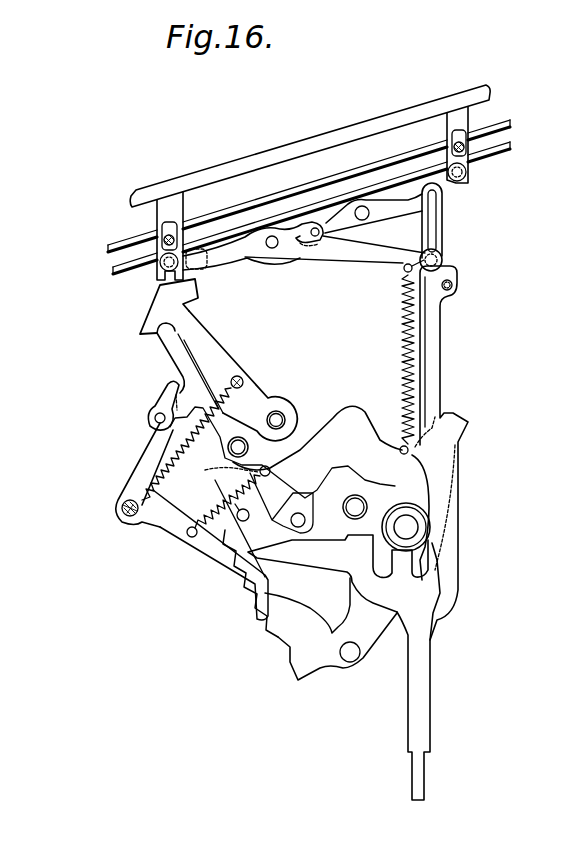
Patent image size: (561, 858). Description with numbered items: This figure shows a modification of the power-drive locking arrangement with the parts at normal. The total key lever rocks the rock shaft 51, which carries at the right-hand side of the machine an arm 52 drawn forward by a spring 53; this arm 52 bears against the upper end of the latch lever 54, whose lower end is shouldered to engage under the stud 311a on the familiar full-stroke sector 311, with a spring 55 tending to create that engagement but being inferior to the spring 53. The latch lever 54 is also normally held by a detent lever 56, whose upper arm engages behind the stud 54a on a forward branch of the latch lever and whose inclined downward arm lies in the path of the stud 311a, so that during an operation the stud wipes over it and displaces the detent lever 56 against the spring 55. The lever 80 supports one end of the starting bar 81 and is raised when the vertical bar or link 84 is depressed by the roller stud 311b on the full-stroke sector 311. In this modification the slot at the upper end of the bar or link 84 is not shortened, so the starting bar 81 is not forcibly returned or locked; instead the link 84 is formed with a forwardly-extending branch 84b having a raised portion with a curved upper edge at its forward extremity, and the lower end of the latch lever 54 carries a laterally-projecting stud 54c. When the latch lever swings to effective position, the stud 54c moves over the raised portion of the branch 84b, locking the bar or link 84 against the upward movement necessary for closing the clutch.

The starting bar 81 is at (332, 131).
The starting bar lever 80 is at (247, 258).
The arm 52 is at (227, 359).
The latch lever 54 is at (177, 357).
The stud 54a is at (153, 417).
The laterally-projecting stud 54c is at (302, 496).
The rock shaft 51 is at (278, 416).
The spring 53 is at (190, 438).
The spring 55 is at (189, 535).
The detent lever 56 is at (148, 471).
The vertical bar or link 84 is at (453, 537).
The forwardly-extending branch 84b is at (320, 558).
The full-stroke sector 311 is at (328, 656).
The stud 311a is at (243, 522).
The roller stud 311b is at (362, 498).